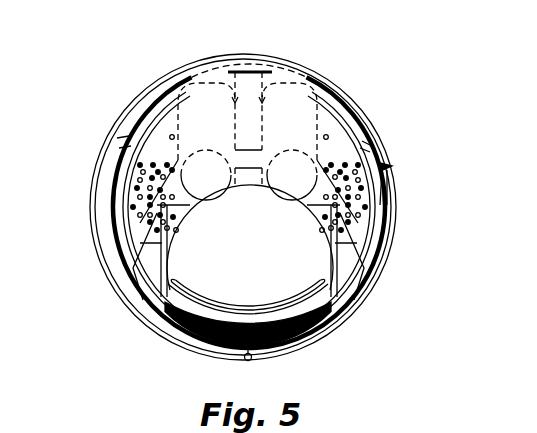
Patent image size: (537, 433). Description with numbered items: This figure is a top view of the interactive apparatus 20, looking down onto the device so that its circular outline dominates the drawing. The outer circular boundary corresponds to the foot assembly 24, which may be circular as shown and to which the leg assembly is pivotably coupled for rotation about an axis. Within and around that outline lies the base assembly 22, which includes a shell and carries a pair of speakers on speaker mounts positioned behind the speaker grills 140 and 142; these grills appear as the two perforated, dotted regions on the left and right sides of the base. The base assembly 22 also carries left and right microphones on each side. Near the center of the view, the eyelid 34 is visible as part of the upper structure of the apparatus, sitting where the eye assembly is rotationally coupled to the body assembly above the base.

The interactive apparatus 20 is at (434, 72).
The base assembly 22 is at (372, 223).
The foot assembly 24 is at (157, 90).
The eyelid 34 is at (197, 268).
The speaker grill 140 is at (360, 187).
The speaker grill 142 is at (140, 178).